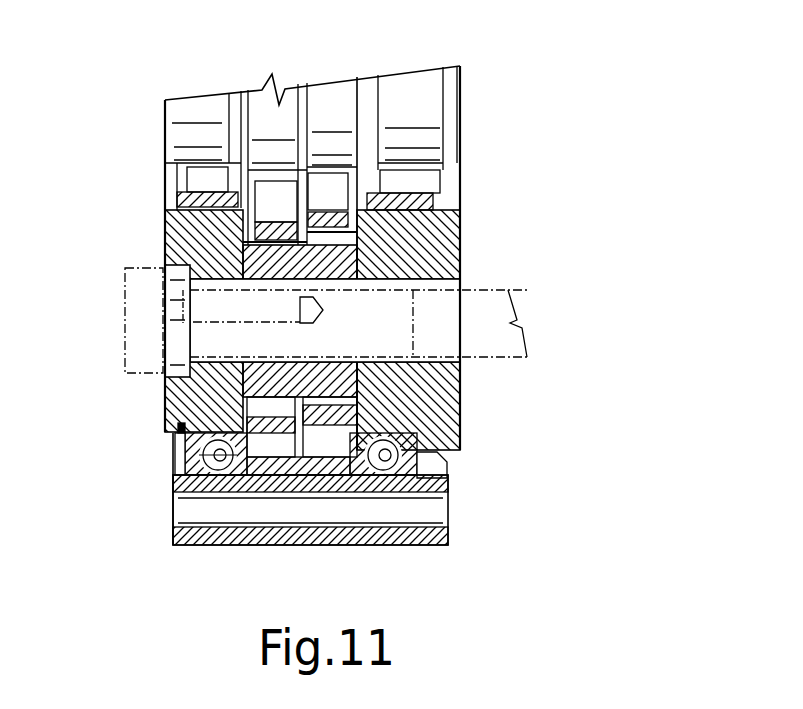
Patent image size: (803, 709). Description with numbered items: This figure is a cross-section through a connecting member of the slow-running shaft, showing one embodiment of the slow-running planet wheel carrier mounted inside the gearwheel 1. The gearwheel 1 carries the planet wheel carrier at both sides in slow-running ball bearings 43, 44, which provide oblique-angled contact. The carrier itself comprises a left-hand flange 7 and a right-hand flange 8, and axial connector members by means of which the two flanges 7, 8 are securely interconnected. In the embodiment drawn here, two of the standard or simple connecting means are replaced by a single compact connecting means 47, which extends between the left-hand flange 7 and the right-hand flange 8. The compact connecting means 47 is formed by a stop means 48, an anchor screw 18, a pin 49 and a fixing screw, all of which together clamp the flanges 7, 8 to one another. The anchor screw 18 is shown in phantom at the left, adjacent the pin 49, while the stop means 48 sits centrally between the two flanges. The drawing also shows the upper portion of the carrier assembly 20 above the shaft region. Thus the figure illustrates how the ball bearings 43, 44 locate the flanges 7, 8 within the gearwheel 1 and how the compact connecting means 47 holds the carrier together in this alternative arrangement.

The gearwheel 1 is at (453, 535).
The left-hand flange 7 is at (165, 412).
The right-hand flange 8 is at (460, 397).
The anchor screw 18 is at (157, 363).
The tool carrier blocks 20 is at (242, 232).
The slow-running ball bearing 43 is at (183, 468).
The slow-running ball bearing 44 is at (453, 467).
The compact connecting means 47 is at (360, 342).
The stop means 48 is at (347, 262).
The pin 49 is at (210, 308).